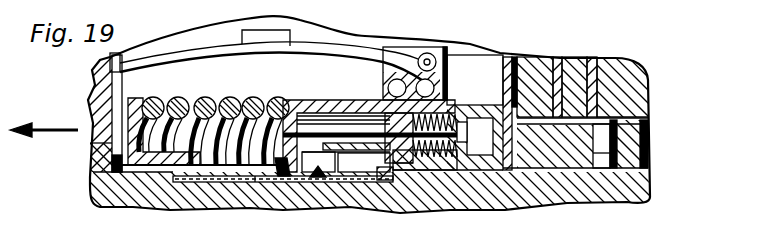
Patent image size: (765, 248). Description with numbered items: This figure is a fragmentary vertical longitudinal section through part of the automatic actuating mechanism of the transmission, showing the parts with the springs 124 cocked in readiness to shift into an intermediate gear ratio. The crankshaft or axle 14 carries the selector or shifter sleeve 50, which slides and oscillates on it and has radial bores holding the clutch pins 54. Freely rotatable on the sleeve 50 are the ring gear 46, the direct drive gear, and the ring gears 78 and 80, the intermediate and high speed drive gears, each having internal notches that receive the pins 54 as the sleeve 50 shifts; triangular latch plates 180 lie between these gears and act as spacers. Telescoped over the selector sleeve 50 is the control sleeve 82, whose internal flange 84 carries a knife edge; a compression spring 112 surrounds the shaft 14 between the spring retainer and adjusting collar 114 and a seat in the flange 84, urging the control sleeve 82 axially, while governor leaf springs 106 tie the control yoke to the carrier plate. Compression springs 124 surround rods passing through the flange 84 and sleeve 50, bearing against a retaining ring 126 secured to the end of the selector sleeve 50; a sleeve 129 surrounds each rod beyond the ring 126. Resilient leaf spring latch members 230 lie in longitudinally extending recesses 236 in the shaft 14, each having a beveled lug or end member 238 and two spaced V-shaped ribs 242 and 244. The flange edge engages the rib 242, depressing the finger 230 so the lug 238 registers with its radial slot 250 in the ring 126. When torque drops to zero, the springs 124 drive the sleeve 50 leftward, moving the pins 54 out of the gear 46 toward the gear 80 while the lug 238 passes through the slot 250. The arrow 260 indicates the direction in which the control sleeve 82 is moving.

The crankshaft or axle 14 is at (152, 190).
The ring gear 46 is at (623, 80).
The selector or shifter sleeve 50 is at (483, 113).
The clutch pins 54 is at (612, 153).
The ring gear 78 is at (540, 77).
The ring gear 80 is at (570, 80).
The control sleeve 82 is at (300, 100).
The internal flange 84 is at (278, 180).
The governor leaf springs 106 is at (162, 57).
The compression spring 112 is at (207, 98).
The spring retainer and adjusting collar 114 is at (167, 98).
The compression springs 124 is at (449, 90).
The retaining ring 126 is at (430, 167).
The sleeve 129 is at (352, 100).
The triangular latch plates 180 is at (520, 63).
The resilient leaf spring latch members 230 is at (217, 183).
The longitudinally extending recess 236 is at (303, 184).
The lug or end member 238 is at (386, 183).
The rib 242 is at (256, 185).
The rib 244 is at (322, 184).
The radial slots 250 is at (400, 170).
The arrow 260 is at (54, 133).